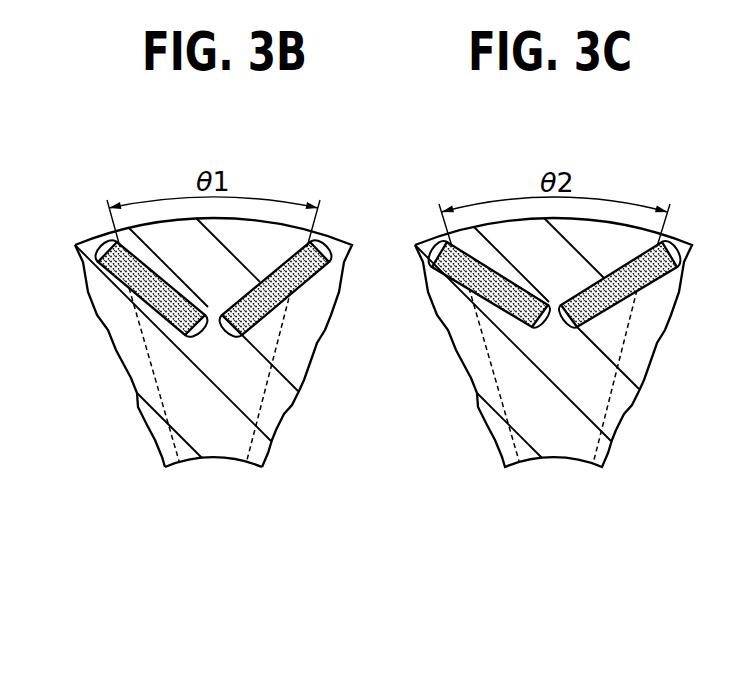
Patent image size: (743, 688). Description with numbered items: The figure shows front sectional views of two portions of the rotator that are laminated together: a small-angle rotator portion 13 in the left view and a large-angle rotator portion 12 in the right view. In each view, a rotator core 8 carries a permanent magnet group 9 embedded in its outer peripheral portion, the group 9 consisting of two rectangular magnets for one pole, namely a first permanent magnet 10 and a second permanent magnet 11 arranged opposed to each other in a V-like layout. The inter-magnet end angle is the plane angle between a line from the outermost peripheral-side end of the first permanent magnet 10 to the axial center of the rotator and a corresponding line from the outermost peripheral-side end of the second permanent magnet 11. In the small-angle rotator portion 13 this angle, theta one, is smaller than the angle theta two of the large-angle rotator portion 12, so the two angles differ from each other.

In FIG. 3B, the rotator core 8 is at (276, 396).
In FIG. 3C, the rotator core 8 is at (617, 397).
In FIG. 3B, the permanent magnet group 9 is at (216, 283).
In FIG. 3C, the permanent magnet group 9 is at (558, 283).
In FIG. 3B, the first permanent magnet 10 is at (267, 314).
In FIG. 3C, the first permanent magnet 10 is at (641, 291).
In FIG. 3B, the second permanent magnet 11 is at (163, 308).
In FIG. 3C, the second permanent magnet 11 is at (503, 308).
In FIG. 3C, the large-angle rotator portion 12 is at (640, 349).
In FIG. 3B, the small-angle rotator portion 13 is at (215, 433).